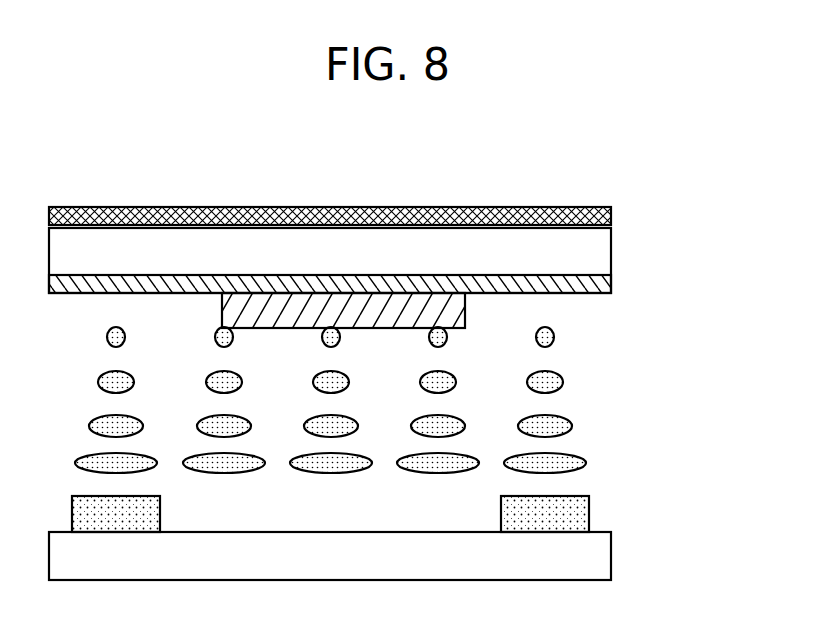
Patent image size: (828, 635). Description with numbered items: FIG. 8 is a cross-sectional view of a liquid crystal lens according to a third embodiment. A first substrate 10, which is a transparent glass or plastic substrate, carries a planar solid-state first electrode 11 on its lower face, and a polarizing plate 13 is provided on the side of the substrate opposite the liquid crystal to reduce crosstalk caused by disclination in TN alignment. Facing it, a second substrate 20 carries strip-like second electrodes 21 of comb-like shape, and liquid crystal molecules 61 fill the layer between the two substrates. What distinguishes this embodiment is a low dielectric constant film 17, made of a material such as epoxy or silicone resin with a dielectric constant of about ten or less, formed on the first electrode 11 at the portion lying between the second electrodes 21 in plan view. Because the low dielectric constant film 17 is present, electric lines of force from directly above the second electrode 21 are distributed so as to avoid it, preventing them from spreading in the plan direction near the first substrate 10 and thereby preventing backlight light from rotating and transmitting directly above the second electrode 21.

The polarizing plate 13 is at (583, 207).
The first substrate 10 is at (611, 250).
The first electrode 11 is at (611, 288).
The low dielectric constant film 17 is at (350, 298).
The liquid crystal molecules 61 is at (565, 418).
The second electrode 21 is at (589, 507).
The second substrate 20 is at (611, 558).